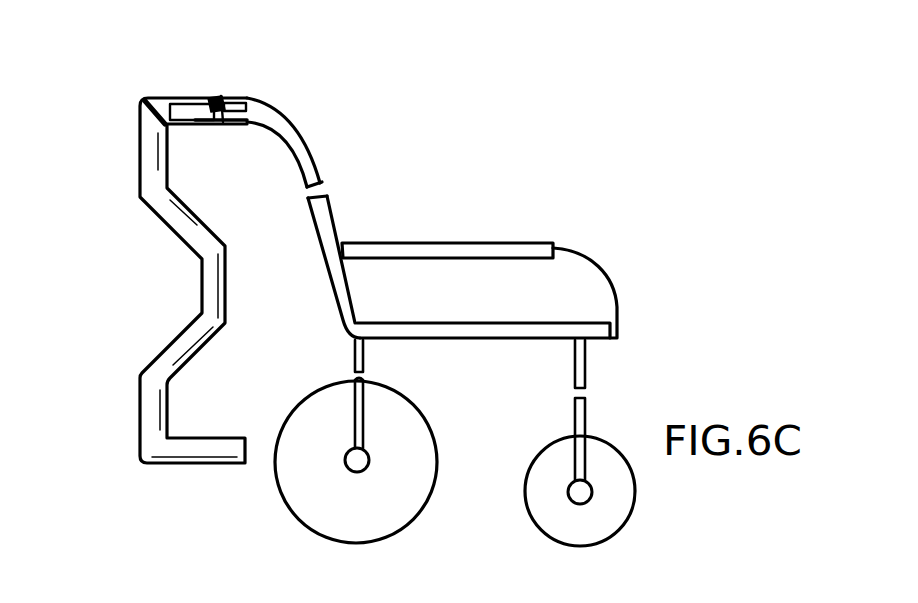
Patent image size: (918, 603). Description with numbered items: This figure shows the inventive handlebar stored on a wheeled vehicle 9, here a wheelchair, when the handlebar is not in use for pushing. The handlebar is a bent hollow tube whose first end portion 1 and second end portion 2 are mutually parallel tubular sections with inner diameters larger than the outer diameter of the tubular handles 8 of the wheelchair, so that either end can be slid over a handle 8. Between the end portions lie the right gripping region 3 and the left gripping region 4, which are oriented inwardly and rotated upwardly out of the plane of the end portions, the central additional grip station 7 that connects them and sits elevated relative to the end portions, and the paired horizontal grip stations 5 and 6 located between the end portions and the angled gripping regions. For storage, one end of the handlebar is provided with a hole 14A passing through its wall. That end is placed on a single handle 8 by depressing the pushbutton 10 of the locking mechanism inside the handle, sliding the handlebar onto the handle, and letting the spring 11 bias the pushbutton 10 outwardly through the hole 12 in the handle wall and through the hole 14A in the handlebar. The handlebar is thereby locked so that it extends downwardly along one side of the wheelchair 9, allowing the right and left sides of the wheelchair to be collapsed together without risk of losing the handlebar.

The first end portion 1 is at (160, 97).
The second end portion 2 is at (207, 463).
The right gripping region 3 is at (160, 223).
The left gripping region 4 is at (157, 353).
The grip station 5 is at (140, 136).
The grip station 6 is at (140, 407).
The additional grip station 7 is at (228, 277).
The tubular handle 8 is at (317, 162).
The wheeled vehicle 9 is at (533, 213).
The pushbutton 10 is at (217, 100).
The spring 11 is at (207, 124).
The hole 12 is at (240, 108).
The hole 14A is at (207, 100).